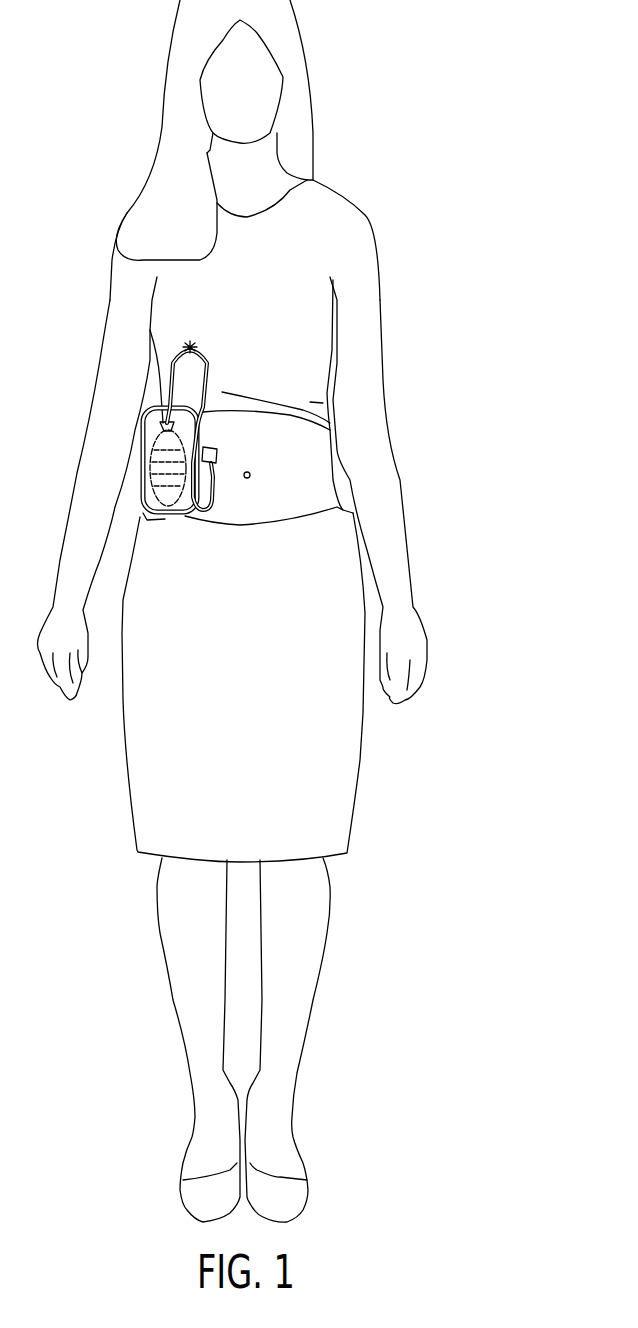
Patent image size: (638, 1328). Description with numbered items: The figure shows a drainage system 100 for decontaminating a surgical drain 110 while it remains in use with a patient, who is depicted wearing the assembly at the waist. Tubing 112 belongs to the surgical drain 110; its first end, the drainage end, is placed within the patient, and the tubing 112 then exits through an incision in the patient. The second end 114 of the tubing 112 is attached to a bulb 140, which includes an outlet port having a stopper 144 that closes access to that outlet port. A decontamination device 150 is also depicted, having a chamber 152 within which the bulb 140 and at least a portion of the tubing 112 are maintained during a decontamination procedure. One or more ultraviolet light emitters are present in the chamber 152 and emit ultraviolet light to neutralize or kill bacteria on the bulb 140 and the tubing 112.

The drainage system 100 is at (412, 157).
The surgical drain 110 is at (140, 448).
The tubing 112 is at (217, 462).
The second end 114 is at (163, 427).
The bulb 140 is at (160, 483).
The stopper 144 is at (157, 437).
The decontamination device 150 is at (140, 488).
The chamber 152 is at (177, 512).